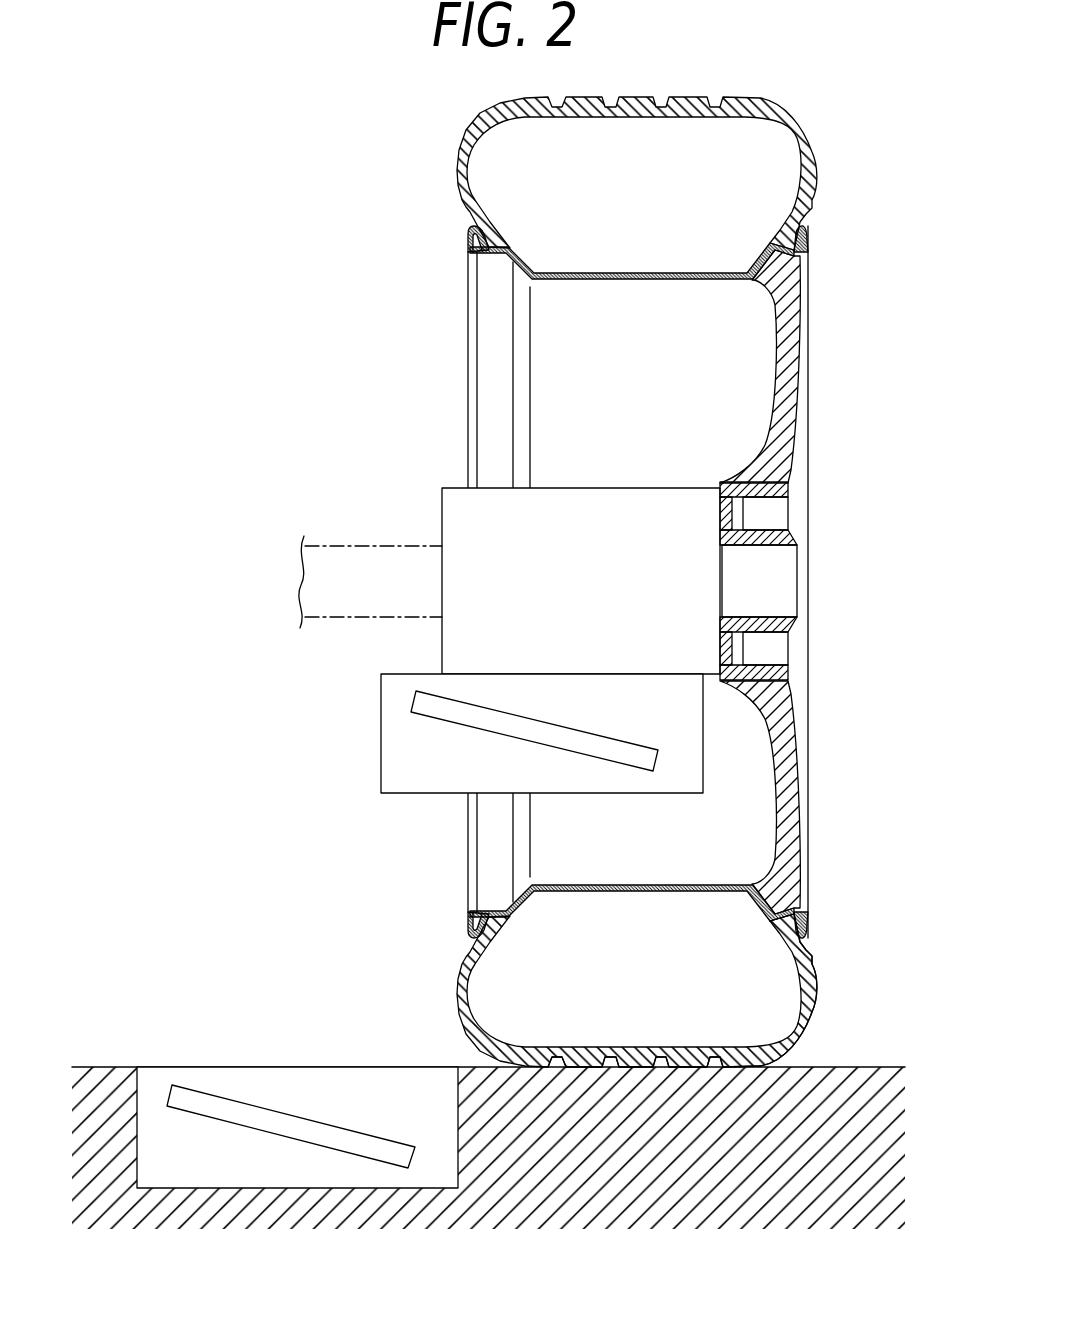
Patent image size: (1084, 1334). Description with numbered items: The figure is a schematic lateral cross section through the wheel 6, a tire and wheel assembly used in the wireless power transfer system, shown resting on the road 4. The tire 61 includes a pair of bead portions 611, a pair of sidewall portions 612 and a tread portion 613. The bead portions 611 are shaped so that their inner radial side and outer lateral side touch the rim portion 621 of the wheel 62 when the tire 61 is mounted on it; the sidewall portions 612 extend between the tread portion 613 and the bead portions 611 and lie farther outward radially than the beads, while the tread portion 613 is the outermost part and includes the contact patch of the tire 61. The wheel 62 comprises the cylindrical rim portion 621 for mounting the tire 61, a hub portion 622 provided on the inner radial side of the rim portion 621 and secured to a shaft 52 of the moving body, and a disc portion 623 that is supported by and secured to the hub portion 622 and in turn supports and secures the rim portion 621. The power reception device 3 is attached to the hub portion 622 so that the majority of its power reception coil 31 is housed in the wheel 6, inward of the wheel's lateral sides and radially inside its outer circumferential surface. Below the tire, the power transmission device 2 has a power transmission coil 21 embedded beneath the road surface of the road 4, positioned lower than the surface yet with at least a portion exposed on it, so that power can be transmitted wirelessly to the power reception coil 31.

The power transmission device 2 is at (297, 1097).
The power transmission coil 21 is at (335, 1138).
The power reception device 3 is at (508, 733).
The power reception coil 31 is at (495, 722).
The road 4 is at (853, 1067).
The shaft 52 is at (390, 560).
The wheel 6 is at (684, 582).
The tire 61 is at (686, 582).
The bead portions 611 is at (798, 892).
The sidewall portions 612 is at (813, 975).
The tread portion 613 is at (688, 1051).
The wheel 62 is at (672, 582).
The rim portion 621 is at (562, 279).
The hub portion 622 is at (601, 505).
The disc portion 623 is at (785, 273).